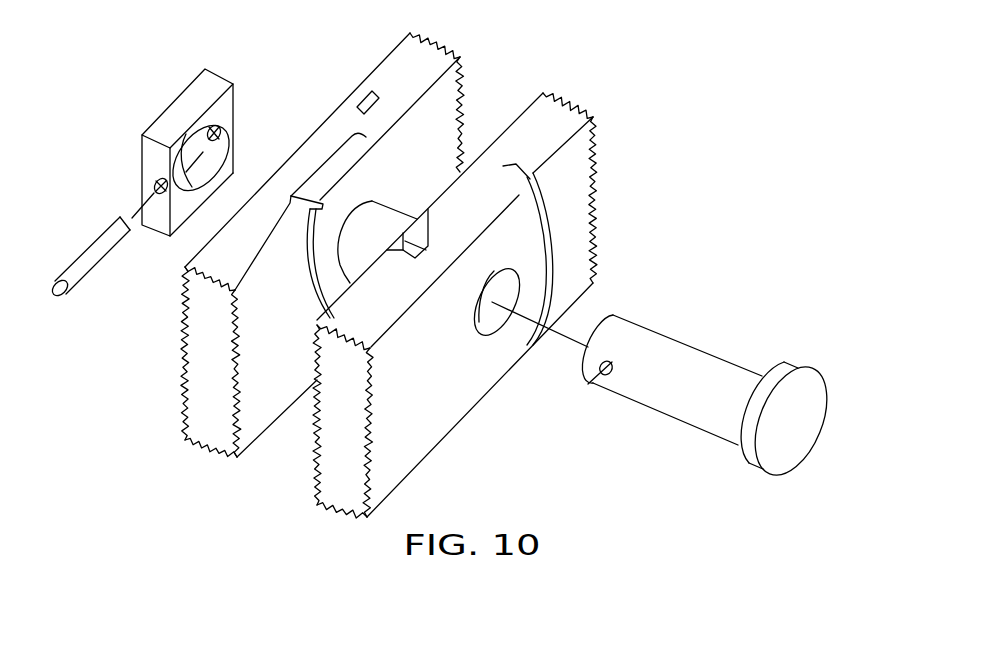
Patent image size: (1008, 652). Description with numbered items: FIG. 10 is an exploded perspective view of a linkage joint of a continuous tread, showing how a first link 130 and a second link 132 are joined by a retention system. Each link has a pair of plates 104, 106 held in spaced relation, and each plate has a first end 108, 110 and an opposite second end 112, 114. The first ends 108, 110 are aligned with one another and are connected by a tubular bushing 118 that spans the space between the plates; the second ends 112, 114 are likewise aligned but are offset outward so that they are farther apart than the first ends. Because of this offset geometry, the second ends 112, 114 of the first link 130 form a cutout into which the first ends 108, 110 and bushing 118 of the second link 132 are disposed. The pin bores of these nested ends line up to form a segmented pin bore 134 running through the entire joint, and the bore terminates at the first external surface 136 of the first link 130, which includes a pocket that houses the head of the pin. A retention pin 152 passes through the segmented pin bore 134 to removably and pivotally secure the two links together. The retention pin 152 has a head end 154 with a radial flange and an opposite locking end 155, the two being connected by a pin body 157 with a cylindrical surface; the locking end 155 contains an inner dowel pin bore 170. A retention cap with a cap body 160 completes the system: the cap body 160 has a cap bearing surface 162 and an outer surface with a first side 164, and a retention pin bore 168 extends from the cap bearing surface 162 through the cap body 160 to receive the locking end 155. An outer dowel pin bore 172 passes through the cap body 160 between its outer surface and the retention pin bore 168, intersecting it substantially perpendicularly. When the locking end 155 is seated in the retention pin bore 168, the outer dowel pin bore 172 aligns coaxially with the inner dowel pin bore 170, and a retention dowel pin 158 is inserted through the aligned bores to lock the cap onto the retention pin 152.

The plate 104 is at (568, 125).
The plate 106 is at (420, 70).
The first end 108 is at (530, 220).
The first end 110 is at (340, 160).
The second end 112 is at (437, 213).
The second end 114 is at (345, 120).
The bushing 118 is at (385, 227).
The first link 130 is at (262, 481).
The second link 132 is at (549, 72).
The segmented pin bore 134 is at (484, 310).
The first external surface 136 is at (528, 248).
The retention pin 152 is at (705, 372).
The head end 154 is at (796, 442).
The locking end 155 is at (625, 330).
The pin body 157 is at (693, 393).
The retention dowel pin 158 is at (102, 247).
The cap body 160 is at (202, 90).
The cap bearing surface 162 is at (230, 102).
The first side 164 is at (153, 156).
The retention pin bore 168 is at (229, 148).
The inner dowel pin bore 170 is at (609, 374).
The outer dowel pin bore 172 is at (167, 194).